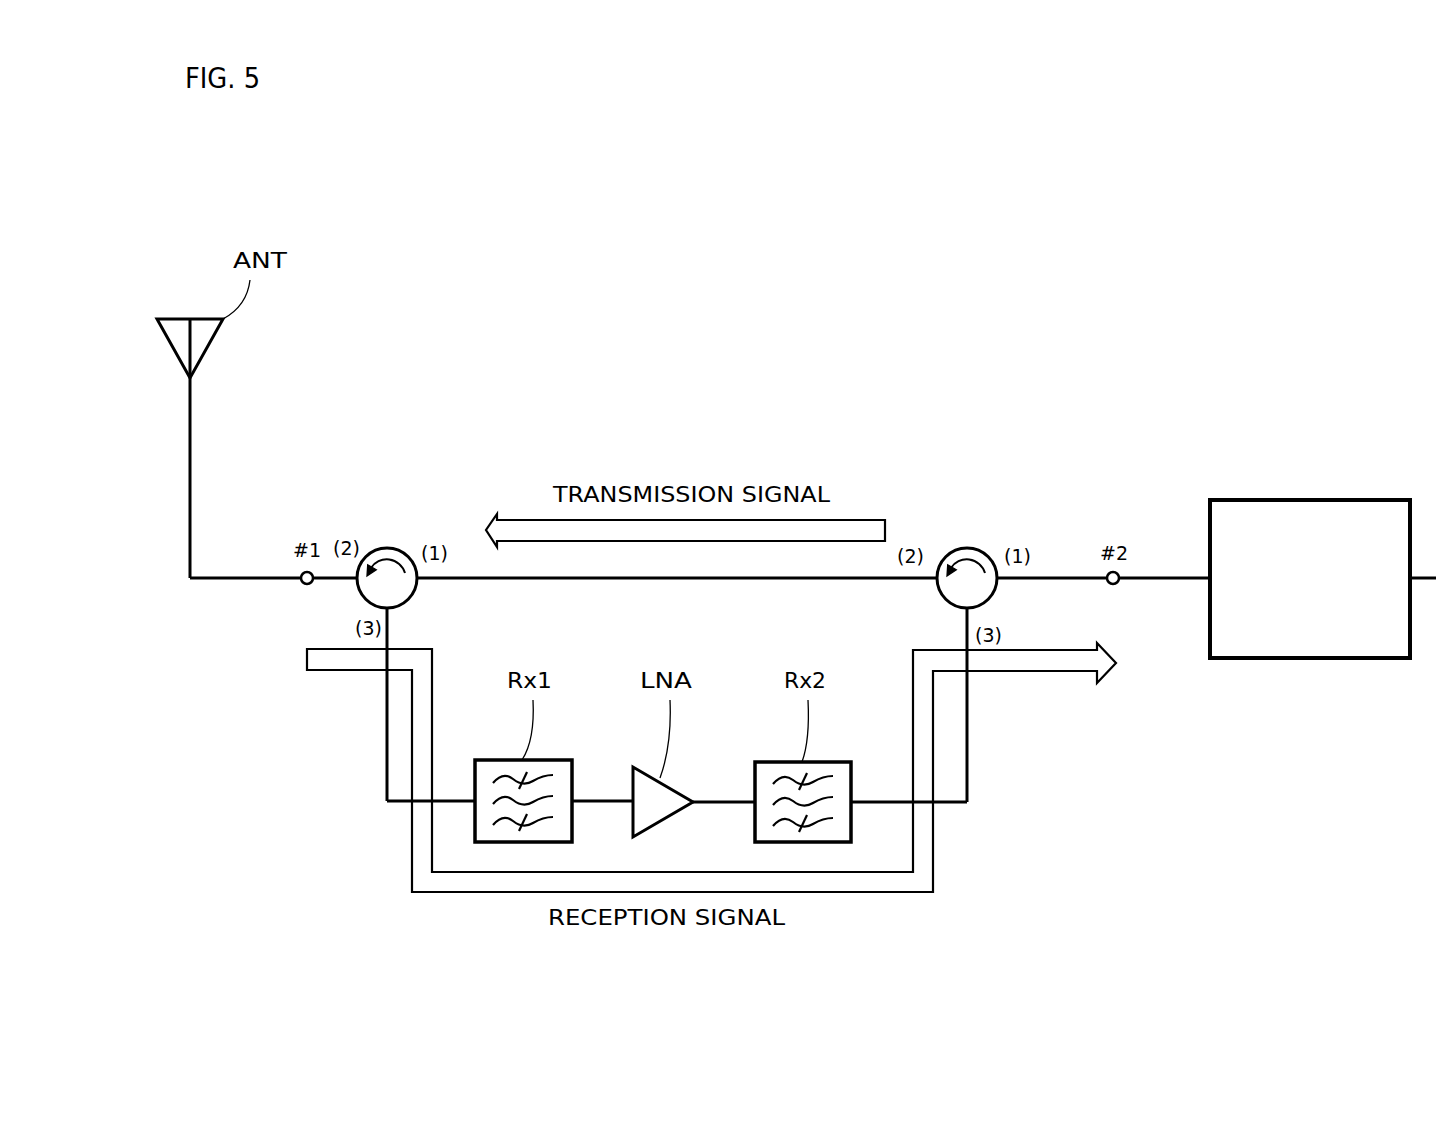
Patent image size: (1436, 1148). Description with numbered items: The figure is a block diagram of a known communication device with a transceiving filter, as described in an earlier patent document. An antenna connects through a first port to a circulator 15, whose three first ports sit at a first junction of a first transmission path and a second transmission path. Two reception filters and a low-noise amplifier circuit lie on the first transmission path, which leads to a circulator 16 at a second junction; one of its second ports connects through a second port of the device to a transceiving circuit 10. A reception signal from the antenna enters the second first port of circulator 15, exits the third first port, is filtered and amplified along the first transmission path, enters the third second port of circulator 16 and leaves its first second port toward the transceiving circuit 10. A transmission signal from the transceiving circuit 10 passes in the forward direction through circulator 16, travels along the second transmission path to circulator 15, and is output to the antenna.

The transceiving circuit 10 is at (1326, 500).
The circulator 15 is at (407, 553).
The circulator 16 is at (987, 553).